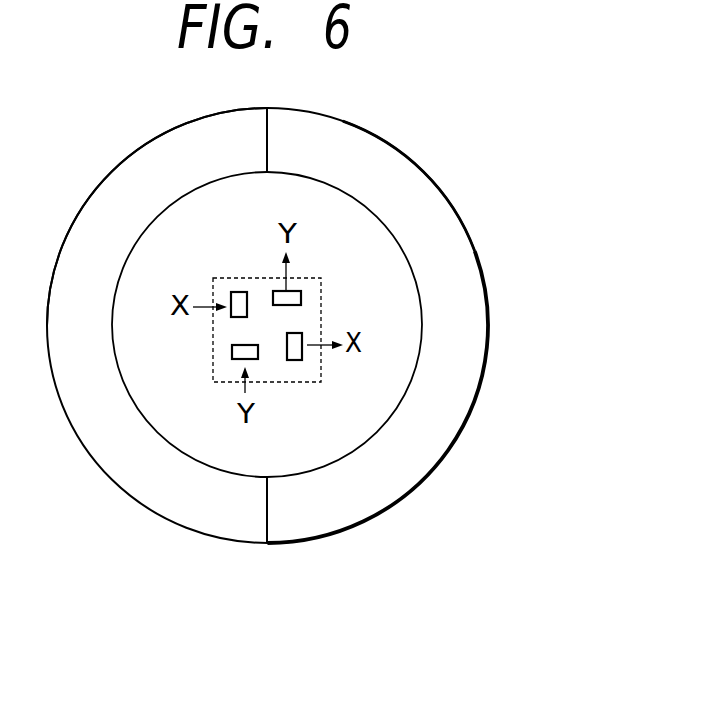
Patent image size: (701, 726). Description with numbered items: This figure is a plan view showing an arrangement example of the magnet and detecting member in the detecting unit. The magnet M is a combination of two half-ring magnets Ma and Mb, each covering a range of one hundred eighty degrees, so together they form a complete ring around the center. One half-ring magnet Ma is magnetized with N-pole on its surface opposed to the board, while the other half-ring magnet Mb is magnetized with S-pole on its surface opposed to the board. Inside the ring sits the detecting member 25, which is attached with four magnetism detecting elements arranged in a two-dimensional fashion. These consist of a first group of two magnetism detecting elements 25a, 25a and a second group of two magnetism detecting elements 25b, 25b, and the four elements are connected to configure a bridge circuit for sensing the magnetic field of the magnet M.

The magnet M is at (470, 437).
The half-ring magnet Ma is at (98, 443).
The half-ring magnet Mb is at (395, 478).
The detecting member 25 is at (322, 297).
The magnetism detecting elements 25a is at (238, 300).
The magnetism detecting elements 25b is at (290, 297).